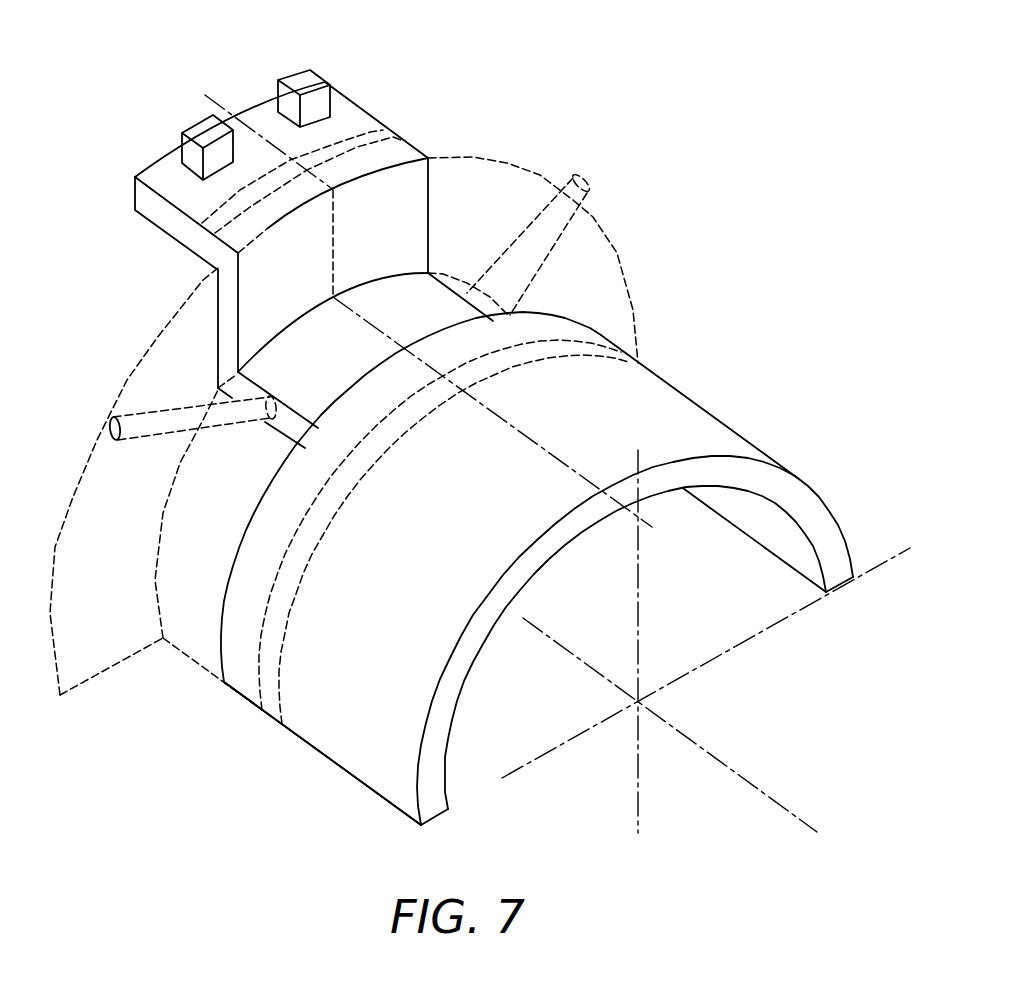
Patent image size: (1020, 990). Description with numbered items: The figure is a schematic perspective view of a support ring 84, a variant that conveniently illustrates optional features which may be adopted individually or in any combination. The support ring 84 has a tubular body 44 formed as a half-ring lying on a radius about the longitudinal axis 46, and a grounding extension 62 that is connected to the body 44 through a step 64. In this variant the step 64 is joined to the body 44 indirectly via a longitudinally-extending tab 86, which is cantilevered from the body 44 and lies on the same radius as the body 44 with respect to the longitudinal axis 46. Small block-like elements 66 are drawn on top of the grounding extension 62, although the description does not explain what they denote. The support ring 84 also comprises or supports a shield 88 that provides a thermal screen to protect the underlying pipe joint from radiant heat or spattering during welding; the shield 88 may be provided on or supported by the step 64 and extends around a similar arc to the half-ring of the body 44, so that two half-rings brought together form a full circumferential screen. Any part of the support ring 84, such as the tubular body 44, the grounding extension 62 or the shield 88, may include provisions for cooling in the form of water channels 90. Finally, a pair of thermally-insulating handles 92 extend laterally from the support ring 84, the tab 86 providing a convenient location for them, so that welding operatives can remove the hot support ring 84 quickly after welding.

The tubular body 44 is at (724, 432).
The longitudinal axis 46 is at (775, 795).
The grounding extension 62 is at (158, 168).
The step 64 is at (418, 208).
The sensor elements 66 is at (300, 80).
The support ring 84 is at (700, 267).
The tab 86 is at (398, 300).
The shield 88 is at (83, 502).
The water channels 90 is at (377, 120).
The handles 92 is at (587, 172).